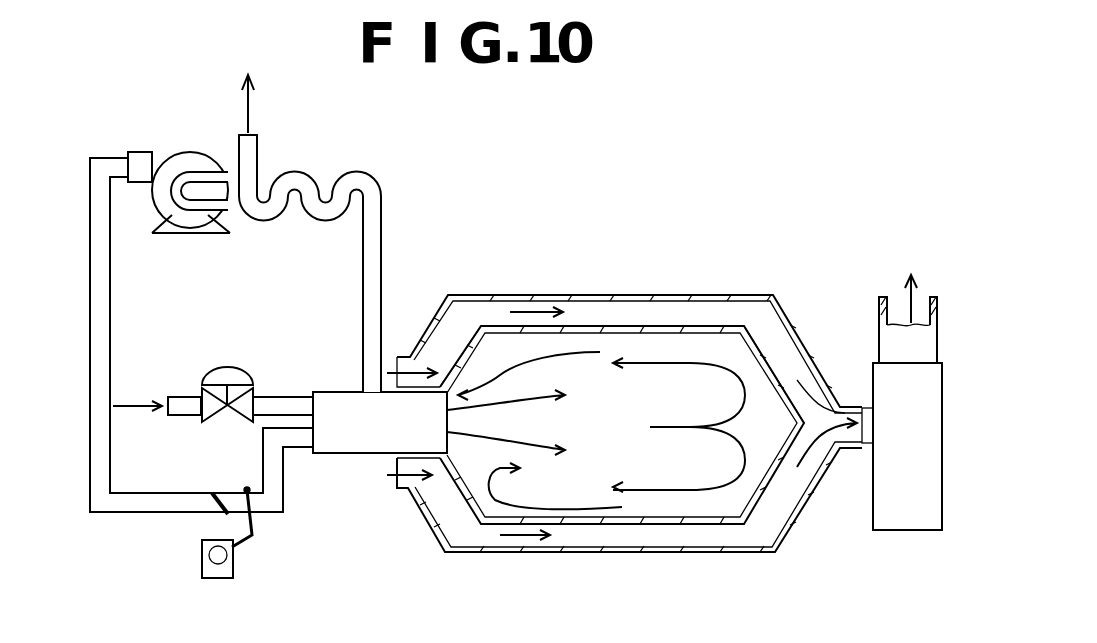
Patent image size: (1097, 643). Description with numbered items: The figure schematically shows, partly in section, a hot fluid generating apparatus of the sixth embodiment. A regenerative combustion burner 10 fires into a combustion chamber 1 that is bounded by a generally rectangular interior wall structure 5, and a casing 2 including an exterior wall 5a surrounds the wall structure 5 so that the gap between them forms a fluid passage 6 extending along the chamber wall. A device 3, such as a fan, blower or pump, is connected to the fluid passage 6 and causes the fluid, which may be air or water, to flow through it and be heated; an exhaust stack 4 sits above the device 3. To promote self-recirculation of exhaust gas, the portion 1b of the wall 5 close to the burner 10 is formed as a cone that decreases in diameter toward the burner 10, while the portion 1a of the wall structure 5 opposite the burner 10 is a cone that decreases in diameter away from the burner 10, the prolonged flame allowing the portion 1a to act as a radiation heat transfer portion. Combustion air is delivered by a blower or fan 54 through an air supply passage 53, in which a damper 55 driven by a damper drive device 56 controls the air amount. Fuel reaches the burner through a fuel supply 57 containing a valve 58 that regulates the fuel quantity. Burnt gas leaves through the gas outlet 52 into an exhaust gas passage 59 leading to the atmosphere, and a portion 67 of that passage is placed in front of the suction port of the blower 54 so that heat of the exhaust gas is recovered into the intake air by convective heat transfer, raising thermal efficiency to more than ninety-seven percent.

The combustion chamber 1 is at (672, 340).
The portion of the wall structure opposite to the burner 1a is at (745, 356).
The portion of the wall close to the burner 1b is at (470, 345).
The casing 2 is at (578, 296).
The device for causing fluid to flow 3 is at (907, 517).
The exhaust stack 4 is at (878, 333).
The interior wall structure 5 is at (617, 325).
The exterior wall 5a is at (525, 553).
The fluid passage 6 is at (497, 312).
The regenerative combustion burner 10 is at (353, 442).
The gas outlet 52 is at (372, 387).
The air supply passage 53 is at (293, 493).
The blower or fan 54 is at (190, 163).
The damper 55 is at (212, 500).
The damper drive device 56 is at (200, 567).
The fuel supply 57 is at (185, 397).
The valve 58 is at (232, 367).
The exhaust gas passage 59 is at (360, 260).
The portion of the exhaust gas passage 67 is at (295, 170).